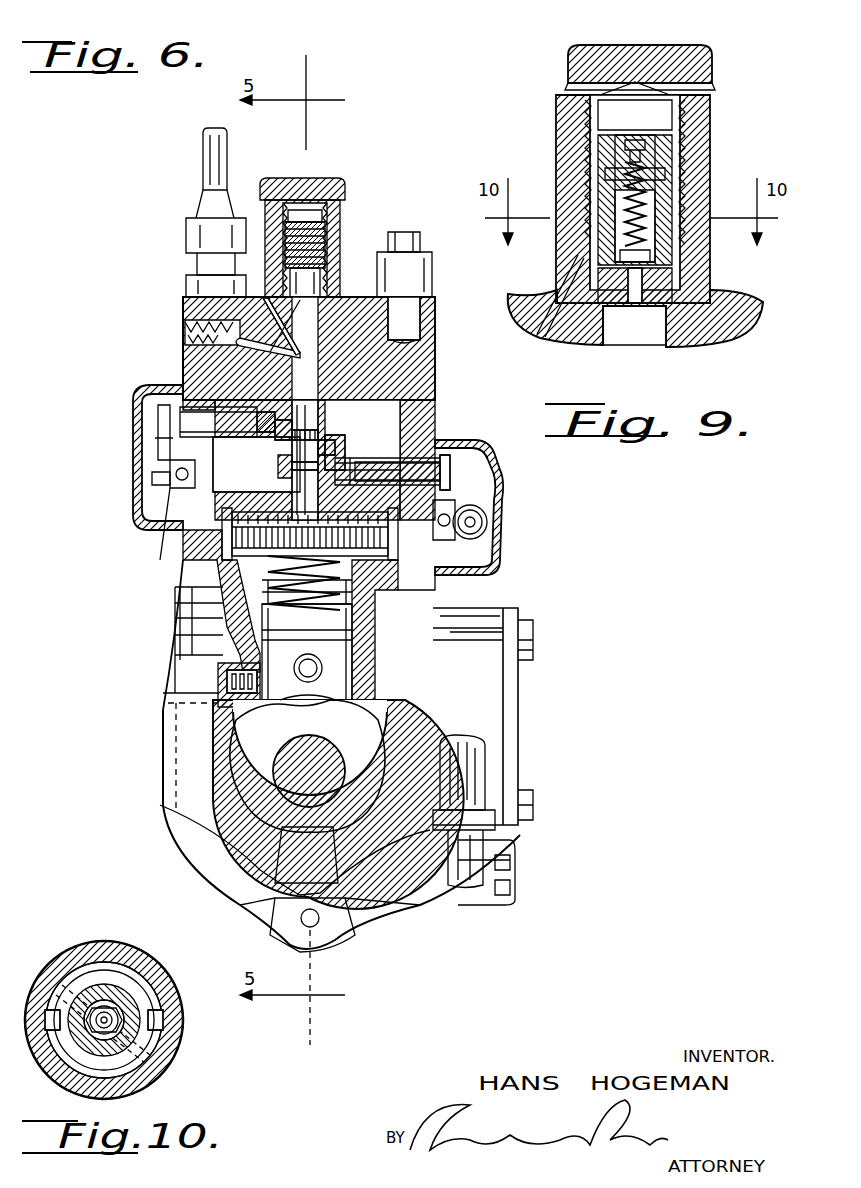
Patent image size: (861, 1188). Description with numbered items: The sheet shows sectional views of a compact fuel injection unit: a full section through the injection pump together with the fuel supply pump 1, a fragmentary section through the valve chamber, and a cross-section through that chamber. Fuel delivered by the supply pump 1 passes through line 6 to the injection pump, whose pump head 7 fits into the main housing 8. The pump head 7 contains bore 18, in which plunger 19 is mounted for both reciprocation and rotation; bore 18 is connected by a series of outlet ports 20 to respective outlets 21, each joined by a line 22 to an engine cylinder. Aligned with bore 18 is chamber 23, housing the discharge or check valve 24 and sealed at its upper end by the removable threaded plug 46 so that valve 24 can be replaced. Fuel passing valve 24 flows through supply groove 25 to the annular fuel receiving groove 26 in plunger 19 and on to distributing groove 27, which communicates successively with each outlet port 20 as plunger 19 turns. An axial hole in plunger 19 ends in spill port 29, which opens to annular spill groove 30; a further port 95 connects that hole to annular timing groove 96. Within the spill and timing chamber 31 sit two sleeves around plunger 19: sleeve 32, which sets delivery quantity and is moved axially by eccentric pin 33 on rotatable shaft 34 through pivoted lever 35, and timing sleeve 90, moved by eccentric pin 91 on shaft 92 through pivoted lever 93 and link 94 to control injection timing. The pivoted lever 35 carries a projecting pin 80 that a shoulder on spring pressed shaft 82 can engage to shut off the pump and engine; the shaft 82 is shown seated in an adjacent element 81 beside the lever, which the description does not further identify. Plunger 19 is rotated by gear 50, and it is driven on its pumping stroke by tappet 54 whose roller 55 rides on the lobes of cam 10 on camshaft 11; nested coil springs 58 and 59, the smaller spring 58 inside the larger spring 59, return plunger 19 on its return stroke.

In FIG. 6, the fuel supply pump 1 is at (533, 668).
In FIG. 6, the line 6 is at (475, 838).
In FIG. 6, the pump head 7 is at (433, 300).
In FIG. 9, the pump head 7 is at (722, 318).
In FIG. 6, the main housing 8 is at (345, 866).
In FIG. 6, the cam 10 is at (247, 790).
In FIG. 6, the camshaft 11 is at (280, 792).
In FIG. 9, the bore 18 is at (648, 335).
In FIG. 6, the plunger 19 is at (350, 510).
In FIG. 6, the outlet ducts or ports 20 is at (358, 295).
In FIG. 6, the outlet 21 is at (197, 205).
In FIG. 6, the conduit or line 22 is at (205, 165).
In FIG. 6, the chamber 23 is at (240, 292).
In FIG. 9, the chamber 23 is at (592, 262).
In FIG. 10, the chamber 23 is at (140, 975).
In FIG. 6, the discharge or check valve 24 is at (318, 300).
In FIG. 9, the discharge or check valve 24 is at (680, 265).
In FIG. 10, the discharge or check valve 24 is at (140, 1040).
In FIG. 6, the supply groove 25 is at (190, 305).
In FIG. 9, the supply groove 25 is at (555, 335).
In FIG. 6, the annular fuel receiving groove 26 is at (298, 360).
In FIG. 6, the distributing groove 27 is at (182, 352).
In FIG. 6, the spill port 29 is at (335, 460).
In FIG. 6, the annular spill groove 30 is at (310, 534).
In FIG. 6, the chamber 31 is at (398, 410).
In FIG. 6, the sleeve 32 is at (280, 475).
In FIG. 6, the eccentric pin 33 is at (338, 462).
In FIG. 6, the rotatable shaft 34 is at (410, 457).
In FIG. 6, the pivoted lever 35 is at (450, 500).
In FIG. 6, the threaded plug 46 is at (335, 185).
In FIG. 9, the threaded plug 46 is at (560, 68).
In FIG. 6, the gear 50 is at (270, 535).
In FIG. 6, the tappet 54 is at (332, 642).
In FIG. 6, the roller 55 is at (318, 700).
In FIG. 6, the coil spring 58 is at (272, 563).
In FIG. 6, the coil spring 59 is at (330, 590).
In FIG. 6, the projecting pin 80 is at (495, 542).
In FIG. 6, the bushing 81 is at (482, 515).
In FIG. 6, the spring pressed shaft 82 is at (478, 522).
In FIG. 6, the timing sleeve 90 is at (320, 418).
In FIG. 6, the eccentric pin 91 is at (260, 440).
In FIG. 6, the shaft 92 is at (240, 422).
In FIG. 6, the pivoted lever 93 is at (170, 440).
In FIG. 6, the link 94 is at (178, 488).
In FIG. 6, the port 95 is at (282, 440).
In FIG. 6, the annular timing groove 96 is at (325, 448).